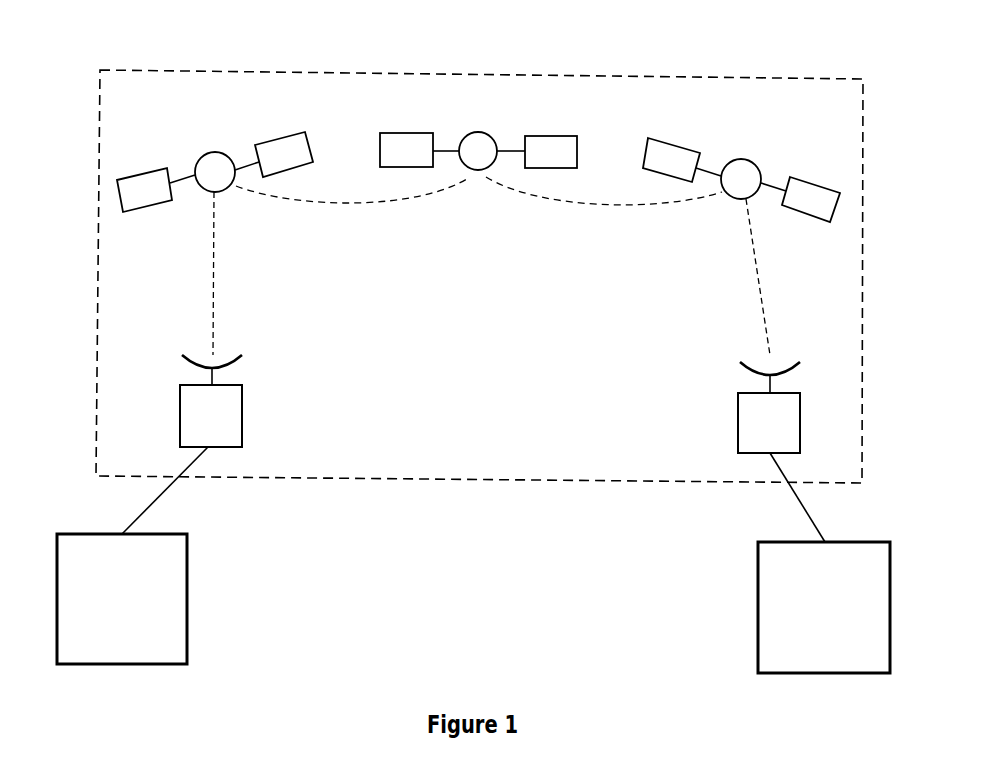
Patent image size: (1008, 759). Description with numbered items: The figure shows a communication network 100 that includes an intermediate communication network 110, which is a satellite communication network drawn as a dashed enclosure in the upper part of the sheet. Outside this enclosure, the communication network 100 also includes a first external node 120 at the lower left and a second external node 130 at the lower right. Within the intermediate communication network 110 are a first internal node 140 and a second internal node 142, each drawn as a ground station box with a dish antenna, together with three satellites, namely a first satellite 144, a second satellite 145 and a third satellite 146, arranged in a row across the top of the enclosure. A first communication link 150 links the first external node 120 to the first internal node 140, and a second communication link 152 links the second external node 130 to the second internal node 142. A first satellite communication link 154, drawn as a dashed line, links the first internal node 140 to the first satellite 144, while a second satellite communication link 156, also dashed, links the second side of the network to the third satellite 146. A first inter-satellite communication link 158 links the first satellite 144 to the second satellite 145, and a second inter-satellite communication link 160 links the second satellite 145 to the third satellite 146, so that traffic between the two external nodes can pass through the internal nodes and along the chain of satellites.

The communication network 100 is at (86, 53).
The intermediate communication network 110 is at (412, 73).
The first external node 120 is at (187, 610).
The second external node 130 is at (758, 617).
The first internal node 140 is at (242, 420).
The second internal node 142 is at (738, 425).
The first satellite 144 is at (233, 137).
The second satellite 145 is at (482, 132).
The third satellite 146 is at (762, 146).
The first communication link 150 is at (163, 495).
The second communication link 152 is at (797, 503).
The first satellite communication link 154 is at (215, 282).
The second satellite communication link 156 is at (773, 290).
The first inter-satellite communication link 158 is at (363, 204).
The second inter-satellite communication link 160 is at (612, 207).